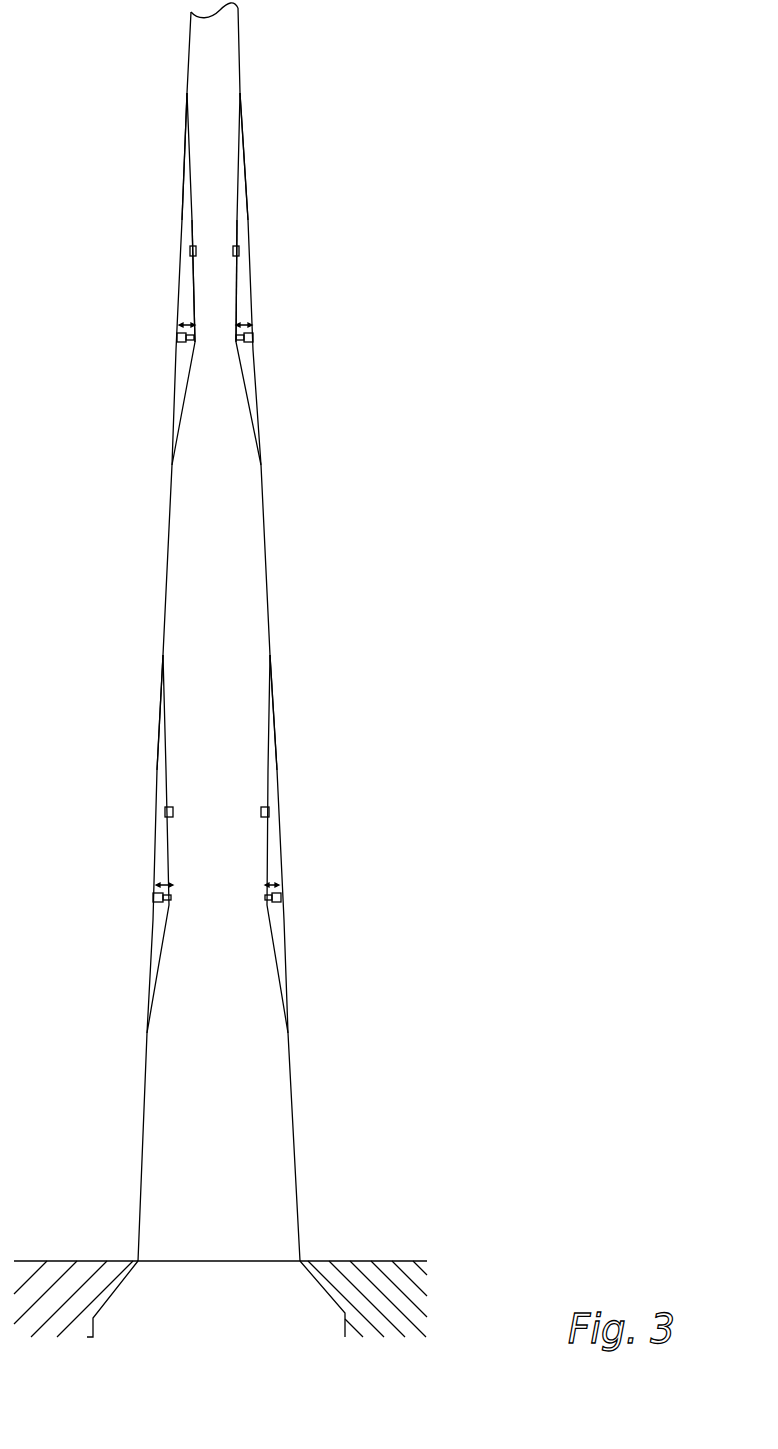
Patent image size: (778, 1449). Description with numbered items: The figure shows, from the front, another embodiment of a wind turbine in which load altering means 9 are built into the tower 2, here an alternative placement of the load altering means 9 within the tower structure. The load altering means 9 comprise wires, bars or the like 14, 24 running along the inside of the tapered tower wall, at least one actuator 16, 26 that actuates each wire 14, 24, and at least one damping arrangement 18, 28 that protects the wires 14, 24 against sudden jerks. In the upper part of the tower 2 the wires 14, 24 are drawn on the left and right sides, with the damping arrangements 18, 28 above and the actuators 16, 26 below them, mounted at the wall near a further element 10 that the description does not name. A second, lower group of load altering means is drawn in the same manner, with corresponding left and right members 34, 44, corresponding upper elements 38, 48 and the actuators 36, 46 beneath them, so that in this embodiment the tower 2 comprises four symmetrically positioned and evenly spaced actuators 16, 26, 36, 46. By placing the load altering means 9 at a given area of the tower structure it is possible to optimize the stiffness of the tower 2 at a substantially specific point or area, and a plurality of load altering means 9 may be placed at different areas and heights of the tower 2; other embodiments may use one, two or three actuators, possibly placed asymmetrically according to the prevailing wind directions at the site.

The tower 2 is at (253, 564).
The wire 14 is at (186, 205).
The wire 24 is at (241, 203).
The damping arrangement 18 is at (190, 250).
The damping arrangement 28 is at (240, 250).
The inner tower wall 10 is at (192, 310).
The load altering means 9 is at (252, 315).
The actuator 16 is at (179, 342).
The actuator 26 is at (252, 342).
The lower tower segment wall 34 is at (158, 765).
The lower tower segment wall 44 is at (268, 764).
The sensor 38 is at (165, 812).
The sensor 48 is at (270, 808).
The actuator 36 is at (153, 902).
The actuator 46 is at (278, 902).